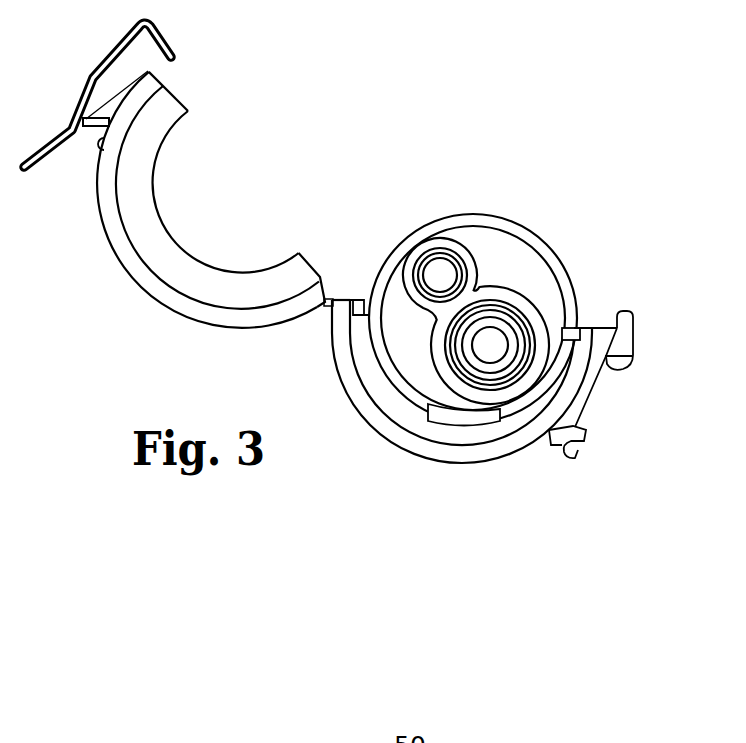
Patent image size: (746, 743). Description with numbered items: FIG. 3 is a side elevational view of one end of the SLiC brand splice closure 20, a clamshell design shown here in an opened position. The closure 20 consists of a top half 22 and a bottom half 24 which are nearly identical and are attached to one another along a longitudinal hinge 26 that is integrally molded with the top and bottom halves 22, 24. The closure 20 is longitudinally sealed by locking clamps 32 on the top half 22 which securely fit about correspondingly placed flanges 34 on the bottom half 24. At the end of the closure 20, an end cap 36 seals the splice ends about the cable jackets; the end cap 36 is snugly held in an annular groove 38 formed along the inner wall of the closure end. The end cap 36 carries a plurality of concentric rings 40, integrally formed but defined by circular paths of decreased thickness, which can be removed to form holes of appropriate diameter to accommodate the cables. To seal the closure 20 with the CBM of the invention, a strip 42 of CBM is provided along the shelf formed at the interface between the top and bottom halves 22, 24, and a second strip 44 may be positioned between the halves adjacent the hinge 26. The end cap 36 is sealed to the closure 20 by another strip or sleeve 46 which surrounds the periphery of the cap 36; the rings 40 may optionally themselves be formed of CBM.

The splice closure 20 is at (407, 208).
The top half 22 is at (213, 326).
The bottom half 24 is at (433, 463).
The longitudinal hinge 26 is at (318, 308).
The locking clamp 32 is at (85, 132).
The flange 34 is at (641, 330).
The end cap 36 is at (498, 245).
The annular groove 38 is at (375, 390).
The concentric rings 40 is at (503, 327).
The strip 42 is at (597, 327).
The second strip 44 is at (346, 300).
The strip or sleeve 46 is at (478, 212).